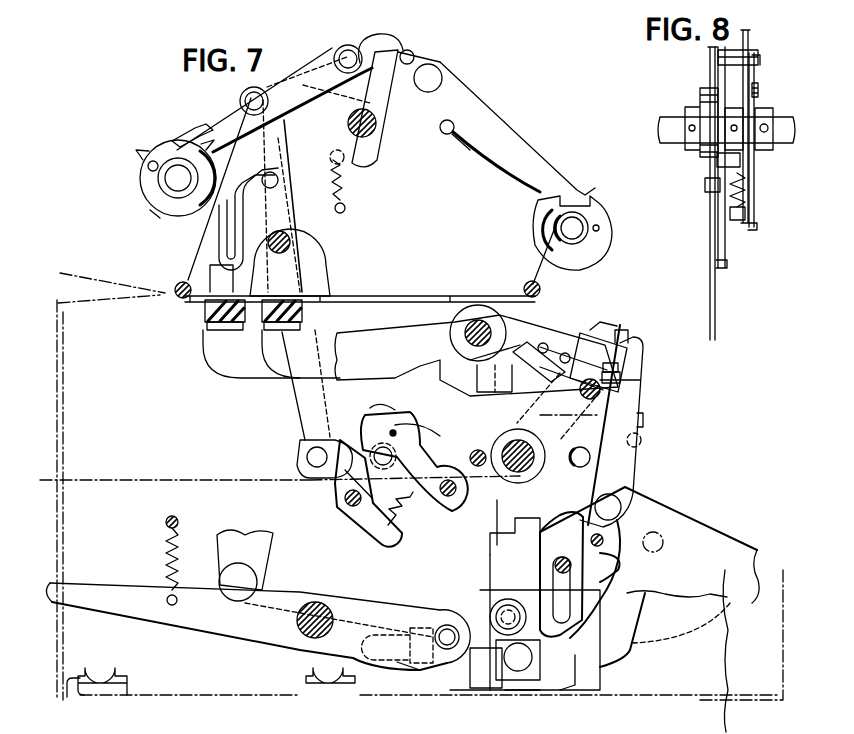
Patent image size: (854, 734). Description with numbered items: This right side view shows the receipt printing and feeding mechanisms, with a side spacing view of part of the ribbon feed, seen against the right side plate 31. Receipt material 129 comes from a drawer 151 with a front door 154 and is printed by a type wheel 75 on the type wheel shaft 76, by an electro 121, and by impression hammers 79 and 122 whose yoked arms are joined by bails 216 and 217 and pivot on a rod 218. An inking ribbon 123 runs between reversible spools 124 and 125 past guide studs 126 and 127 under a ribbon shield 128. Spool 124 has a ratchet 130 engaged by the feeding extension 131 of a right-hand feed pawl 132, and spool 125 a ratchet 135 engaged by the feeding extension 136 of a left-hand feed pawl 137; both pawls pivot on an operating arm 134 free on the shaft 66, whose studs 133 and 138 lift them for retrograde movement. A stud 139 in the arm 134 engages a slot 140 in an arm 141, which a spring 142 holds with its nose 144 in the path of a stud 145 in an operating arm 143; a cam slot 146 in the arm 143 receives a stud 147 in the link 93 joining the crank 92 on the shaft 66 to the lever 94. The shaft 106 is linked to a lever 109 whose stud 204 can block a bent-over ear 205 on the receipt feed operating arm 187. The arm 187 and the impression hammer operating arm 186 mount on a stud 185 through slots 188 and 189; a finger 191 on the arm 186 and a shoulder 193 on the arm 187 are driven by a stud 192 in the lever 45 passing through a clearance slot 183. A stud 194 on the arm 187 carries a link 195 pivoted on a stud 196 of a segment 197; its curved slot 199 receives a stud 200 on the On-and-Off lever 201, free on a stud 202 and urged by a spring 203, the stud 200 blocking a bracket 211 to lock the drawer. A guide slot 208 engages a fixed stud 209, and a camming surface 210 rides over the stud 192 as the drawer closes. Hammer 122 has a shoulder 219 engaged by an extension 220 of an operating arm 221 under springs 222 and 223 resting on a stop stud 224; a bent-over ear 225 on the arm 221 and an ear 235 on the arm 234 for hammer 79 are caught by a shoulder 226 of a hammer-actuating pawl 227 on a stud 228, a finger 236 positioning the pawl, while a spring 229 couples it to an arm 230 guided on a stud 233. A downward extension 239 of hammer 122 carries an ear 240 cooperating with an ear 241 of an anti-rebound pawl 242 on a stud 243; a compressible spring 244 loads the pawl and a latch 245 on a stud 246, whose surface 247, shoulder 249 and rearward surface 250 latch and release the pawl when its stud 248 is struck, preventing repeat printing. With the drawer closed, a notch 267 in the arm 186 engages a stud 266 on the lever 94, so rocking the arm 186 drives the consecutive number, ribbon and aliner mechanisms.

In FIG. 7, the right side plate 31 is at (732, 718).
In FIG. 7, the lever 45 is at (742, 547).
In FIG. 7, the shaft 66 is at (378, 140).
In FIG. 7, the type wheel 75 is at (330, 262).
In FIG. 7, the type wheel shaft 76 is at (284, 255).
In FIG. 7, the impression hammer 79 is at (304, 312).
In FIG. 7, the crank 92 is at (286, 134).
In FIG. 8, the crank 92 is at (710, 85).
In FIG. 7, the link 93 is at (296, 228).
In FIG. 8, the link 93 is at (718, 300).
In FIG. 7, the lever 94 is at (300, 455).
In FIG. 8, the shaft 106 is at (668, 115).
In FIG. 7, the lever 109 is at (579, 389).
In FIG. 7, the electro 121 is at (205, 264).
In FIG. 7, the electro impression hammer 122 is at (204, 312).
In FIG. 7, the inking ribbon 123 is at (541, 267).
In FIG. 7, the right-hand ribbon spool 124 is at (556, 230).
In FIG. 7, the left-hand ribbon spool 125 is at (168, 185).
In FIG. 7, the guide stud 126 is at (524, 288).
In FIG. 7, the guide stud 127 is at (177, 284).
In FIG. 7, the ribbon shield 128 is at (480, 297).
In FIG. 7, the receipt material 129 is at (120, 284).
In FIG. 7, the ratchet 130 is at (586, 198).
In FIG. 7, the feeding extension 131 is at (558, 178).
In FIG. 7, the right-hand feed pawl 132 is at (492, 180).
In FIG. 7, the stud 133 is at (449, 140).
In FIG. 7, the operating arm 134 is at (431, 135).
In FIG. 8, the operating arm 134 is at (750, 40).
In FIG. 7, the ratchet 135 is at (152, 157).
In FIG. 7, the feeding extension 136 is at (182, 134).
In FIG. 7, the left-hand feed pawl 137 is at (333, 55).
In FIG. 7, the stud 138 is at (312, 78).
In FIG. 7, the stud 139 is at (383, 42).
In FIG. 8, the stud 139 is at (760, 93).
In FIG. 7, the slot 140 is at (392, 115).
In FIG. 7, the arm 141 is at (347, 205).
In FIG. 8, the arm 141 is at (755, 190).
In FIG. 7, the spring 142 is at (352, 176).
In FIG. 8, the spring 142 is at (747, 175).
In FIG. 7, the operating arm 143 is at (258, 172).
In FIG. 8, the operating arm 143 is at (727, 252).
In FIG. 7, the operating nose 144 is at (412, 50).
In FIG. 7, the stud 145 is at (434, 66).
In FIG. 8, the stud 145 is at (735, 67).
In FIG. 7, the cam slot 146 is at (218, 232).
In FIG. 7, the stud 147 is at (279, 180).
In FIG. 8, the stud 147 is at (705, 185).
In FIG. 7, the receipt material drawer 151 is at (250, 692).
In FIG. 7, the front door 154 is at (58, 334).
In FIG. 7, the clearance slot 183 is at (557, 693).
In FIG. 7, the stud 185 is at (536, 440).
In FIG. 7, the impression hammer operating arm 186 is at (500, 600).
In FIG. 7, the receipt feed operating arm 187 is at (568, 678).
In FIG. 7, the slot 188 is at (500, 520).
In FIG. 7, the slot 189 is at (584, 630).
In FIG. 7, the finger 191 is at (478, 690).
In FIG. 7, the driving stud 192 is at (505, 660).
In FIG. 7, the shoulder 193 is at (518, 693).
In FIG. 7, the stud 194 is at (548, 628).
In FIG. 7, the link 195 is at (390, 672).
In FIG. 7, the stud 196 is at (257, 580).
In FIG. 7, the segment 197 is at (250, 535).
In FIG. 7, the curved slot 199 is at (397, 669).
In FIG. 7, the stud 200 is at (443, 625).
In FIG. 7, the On-and-Off lever 201 is at (352, 608).
In FIG. 7, the stud 202 is at (320, 602).
In FIG. 7, the spring 203 is at (168, 552).
In FIG. 7, the stud 204 is at (500, 540).
In FIG. 7, the bent-over ear 205 is at (488, 556).
In FIG. 7, the guide slot 208 is at (642, 590).
In FIG. 7, the fixed stud 209 is at (665, 543).
In FIG. 7, the camming surface 210 is at (629, 650).
In FIG. 7, the right-angle bracket 211 is at (395, 578).
In FIG. 7, the bail 216 is at (272, 345).
In FIG. 7, the bail 217 is at (203, 336).
In FIG. 7, the rod 218 is at (460, 325).
In FIG. 7, the shoulder 219 is at (480, 385).
In FIG. 7, the right-angled extension 220 is at (517, 368).
In FIG. 7, the operating arm 221 is at (572, 338).
In FIG. 7, the spring 222 is at (540, 344).
In FIG. 7, the hammer-operating spring 223 is at (476, 450).
In FIG. 7, the stop stud 224 is at (641, 392).
In FIG. 7, the bent-over ear 225 is at (620, 366).
In FIG. 7, the shoulder 226 is at (622, 377).
In FIG. 7, the hammer-actuating pawl 227 is at (644, 420).
In FIG. 7, the stud 228 is at (622, 505).
In FIG. 7, the spring 229 is at (591, 543).
In FIG. 7, the arm 230 is at (624, 561).
In FIG. 7, the stud 233 is at (554, 564).
In FIG. 7, the hammer-operating arm 234 is at (602, 327).
In FIG. 7, the bent-over ear 235 is at (621, 340).
In FIG. 7, the finger 236 is at (645, 345).
In FIG. 7, the downward extension 239 is at (378, 402).
In FIG. 7, the right-angled ear 240 is at (423, 432).
In FIG. 7, the ear 241 is at (398, 458).
In FIG. 7, the anti-rebound pawl 242 is at (408, 518).
In FIG. 7, the stud 243 is at (450, 505).
In FIG. 7, the compressible spring 244 is at (378, 532).
In FIG. 7, the latch 245 is at (342, 499).
In FIG. 7, the stud 246 is at (338, 512).
In FIG. 7, the surface 247 is at (390, 430).
In FIG. 7, the stud 248 is at (340, 486).
In FIG. 7, the downward shoulder 249 is at (300, 430).
In FIG. 7, the rearward surface 250 is at (380, 380).
In FIG. 7, the stud 266 is at (585, 457).
In FIG. 7, the operating notch 267 is at (642, 442).